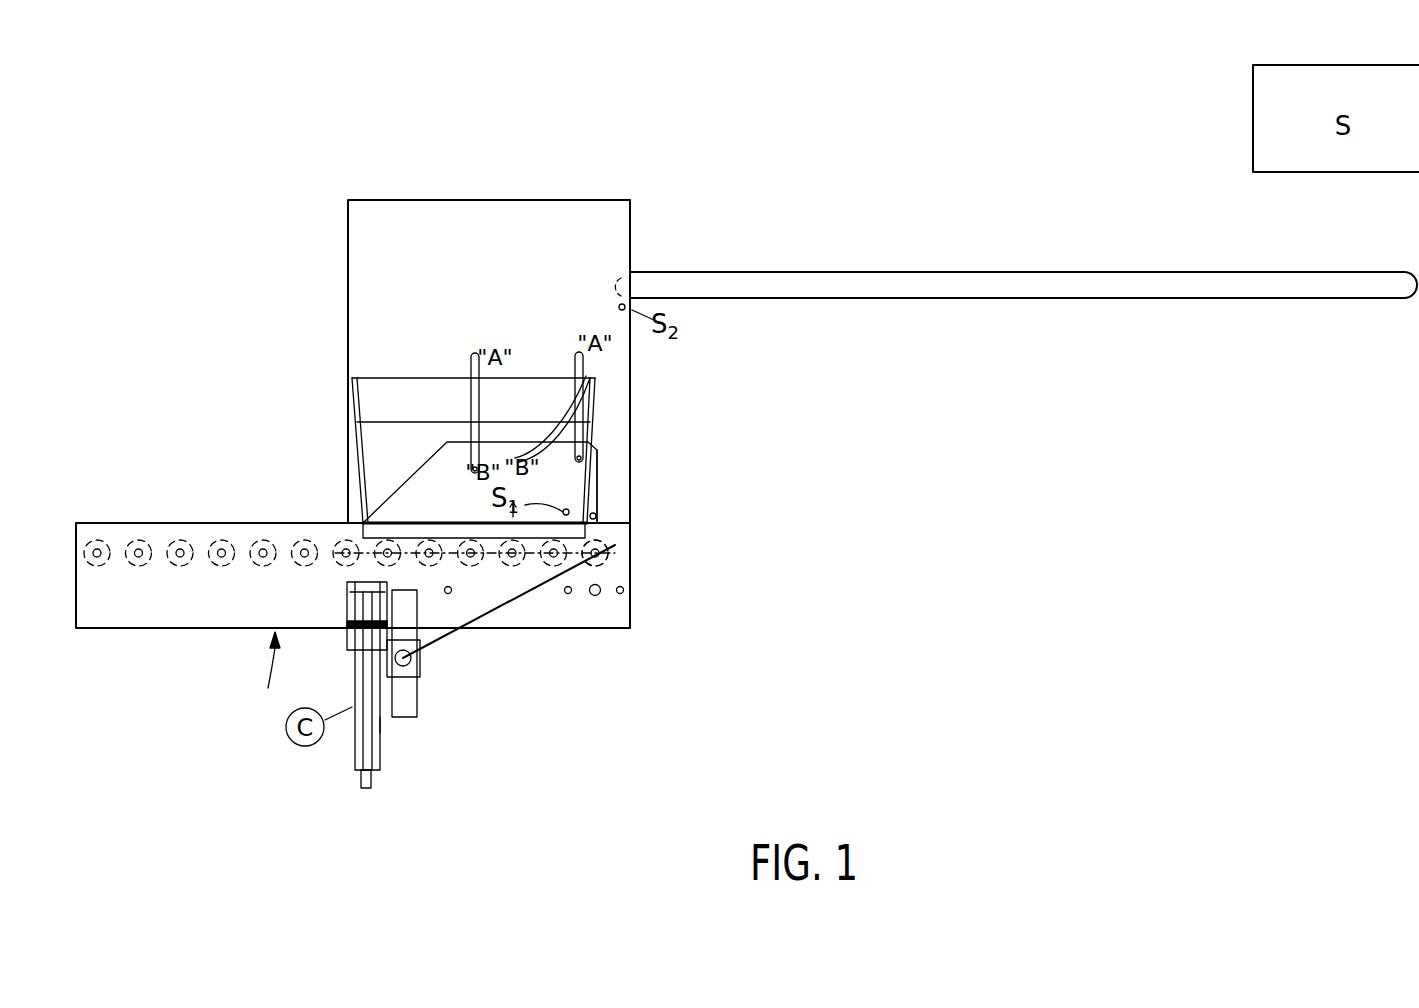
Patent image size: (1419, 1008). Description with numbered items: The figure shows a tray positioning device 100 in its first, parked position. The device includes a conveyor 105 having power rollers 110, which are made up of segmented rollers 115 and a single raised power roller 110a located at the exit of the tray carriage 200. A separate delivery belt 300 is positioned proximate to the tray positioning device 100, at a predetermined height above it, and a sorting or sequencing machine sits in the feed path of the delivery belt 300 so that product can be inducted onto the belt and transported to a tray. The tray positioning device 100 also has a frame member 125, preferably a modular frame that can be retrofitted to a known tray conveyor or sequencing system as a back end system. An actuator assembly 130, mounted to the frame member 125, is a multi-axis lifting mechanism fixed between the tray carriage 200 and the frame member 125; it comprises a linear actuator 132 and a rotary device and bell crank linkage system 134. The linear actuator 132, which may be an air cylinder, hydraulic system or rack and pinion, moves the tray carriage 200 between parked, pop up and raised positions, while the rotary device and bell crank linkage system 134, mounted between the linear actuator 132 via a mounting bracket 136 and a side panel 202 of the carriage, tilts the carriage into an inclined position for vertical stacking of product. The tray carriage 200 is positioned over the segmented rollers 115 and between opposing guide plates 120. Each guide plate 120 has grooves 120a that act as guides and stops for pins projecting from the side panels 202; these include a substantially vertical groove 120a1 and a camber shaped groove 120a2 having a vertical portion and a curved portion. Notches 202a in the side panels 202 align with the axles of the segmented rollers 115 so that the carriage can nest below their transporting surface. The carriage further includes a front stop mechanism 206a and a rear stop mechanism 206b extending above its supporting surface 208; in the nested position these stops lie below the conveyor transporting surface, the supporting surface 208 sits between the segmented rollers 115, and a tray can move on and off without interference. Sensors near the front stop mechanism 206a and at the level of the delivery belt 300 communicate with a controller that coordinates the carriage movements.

The tray positioning device 100 is at (130, 441).
The conveyor 105 is at (177, 629).
The power rollers 110 is at (183, 544).
The single raised power roller 110a is at (628, 562).
The segmented rollers 115 is at (575, 566).
The guide plate 120 is at (577, 200).
The grooves 120a is at (583, 371).
The substantially vertical groove 120a1 is at (473, 353).
The camber shaped groove 120a2 is at (578, 352).
The frame member 125 is at (264, 675).
The actuator assembly 130 is at (380, 733).
The linear actuator 132 is at (369, 788).
The rotary device and bell crank linkage system 134 is at (411, 662).
The mounting bracket 136 is at (347, 585).
The tray carriage 200 is at (385, 487).
The side panel 202 is at (440, 460).
The notches 202a is at (597, 595).
The front stop mechanism 206a is at (600, 520).
The rear stop mechanism 206b is at (352, 518).
The supporting surface 208 is at (615, 545).
The delivery belt 300 is at (1128, 299).